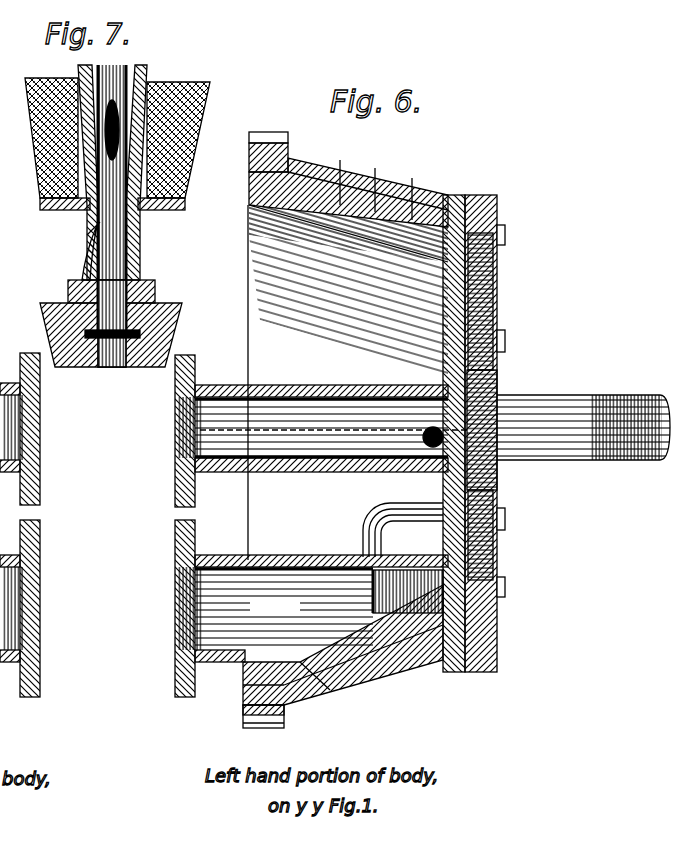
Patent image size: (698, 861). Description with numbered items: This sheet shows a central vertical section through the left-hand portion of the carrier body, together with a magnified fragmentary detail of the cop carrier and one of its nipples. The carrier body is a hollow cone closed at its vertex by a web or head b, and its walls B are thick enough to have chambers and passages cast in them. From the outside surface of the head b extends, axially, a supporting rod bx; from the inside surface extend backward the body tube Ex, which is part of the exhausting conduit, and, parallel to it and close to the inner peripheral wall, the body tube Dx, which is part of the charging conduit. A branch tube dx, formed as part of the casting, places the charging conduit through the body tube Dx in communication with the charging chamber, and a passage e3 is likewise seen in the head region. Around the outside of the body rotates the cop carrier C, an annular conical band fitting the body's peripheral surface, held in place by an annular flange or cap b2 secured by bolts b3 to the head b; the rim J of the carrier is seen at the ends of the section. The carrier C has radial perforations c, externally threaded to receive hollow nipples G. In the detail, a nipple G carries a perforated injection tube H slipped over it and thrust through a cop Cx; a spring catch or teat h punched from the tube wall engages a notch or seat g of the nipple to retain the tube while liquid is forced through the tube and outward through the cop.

In FIG. 6, the rim flange J is at (268, 136).
In FIG. 6, the cop carrier C is at (364, 188).
In FIG. 7, the cop carrier C is at (168, 316).
In FIG. 6, the perforations c is at (318, 708).
In FIG. 7, the perforations c is at (110, 368).
In FIG. 6, the body bracket B is at (238, 363).
In FIG. 7, the body bracket B is at (20, 485).
In FIG. 6, the web or head b is at (447, 350).
In FIG. 6, the annular flange or cap b2 is at (492, 260).
In FIG. 6, the bolts b3 is at (505, 343).
In FIG. 6, the supporting rod bx is at (640, 414).
In FIG. 6, the body tube Ex is at (303, 414).
In FIG. 6, the pin e3 is at (422, 437).
In FIG. 6, the branch tube dx is at (406, 558).
In FIG. 6, the body tube Dx is at (318, 606).
In FIG. 7, the cops Cx is at (195, 142).
In FIG. 7, the hollow nipple G is at (112, 197).
In FIG. 7, the spring catch or teat h is at (85, 235).
In FIG. 7, the notch or seat g is at (88, 232).
In FIG. 7, the perforated injection tube H is at (142, 232).